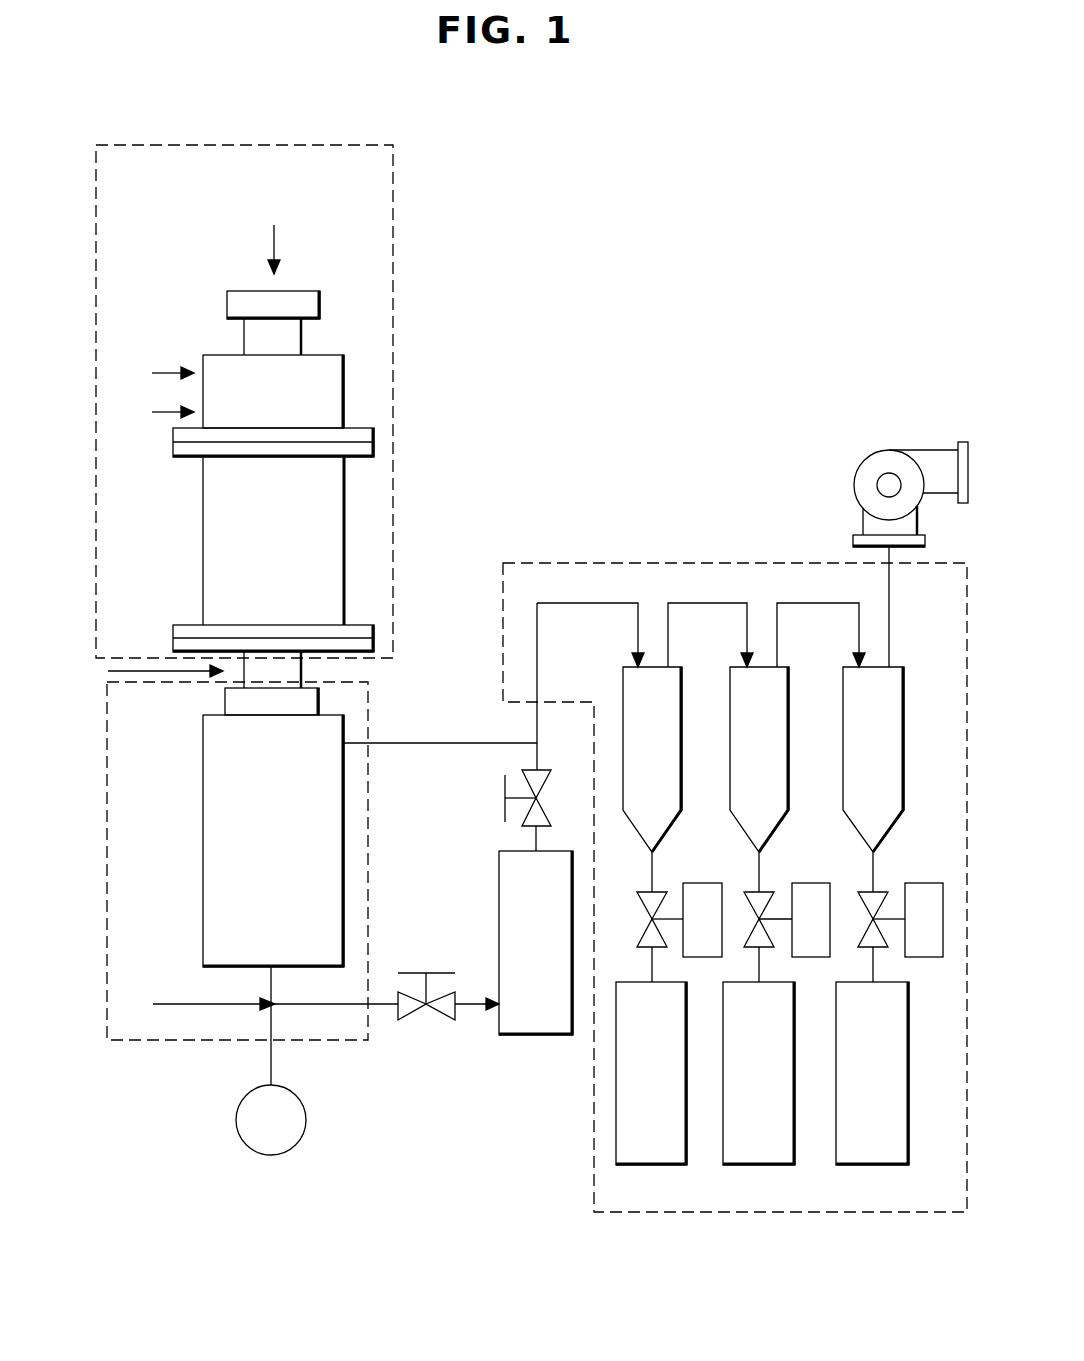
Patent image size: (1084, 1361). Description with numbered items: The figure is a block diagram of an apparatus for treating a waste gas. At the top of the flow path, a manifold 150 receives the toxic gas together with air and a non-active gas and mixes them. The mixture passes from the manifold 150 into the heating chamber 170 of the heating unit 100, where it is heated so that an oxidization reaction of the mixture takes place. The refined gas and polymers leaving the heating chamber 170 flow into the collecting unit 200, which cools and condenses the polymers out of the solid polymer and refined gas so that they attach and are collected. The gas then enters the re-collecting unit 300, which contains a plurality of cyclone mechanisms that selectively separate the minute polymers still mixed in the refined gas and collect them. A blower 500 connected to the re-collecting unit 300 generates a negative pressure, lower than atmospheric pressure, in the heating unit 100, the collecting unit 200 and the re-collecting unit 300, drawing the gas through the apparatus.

The heating unit 100 is at (304, 401).
The manifold 150 is at (344, 392).
The heating chamber 170 is at (344, 540).
The collecting unit 200 is at (368, 857).
The re-collecting unit 300 is at (745, 561).
The blower 500 is at (870, 487).